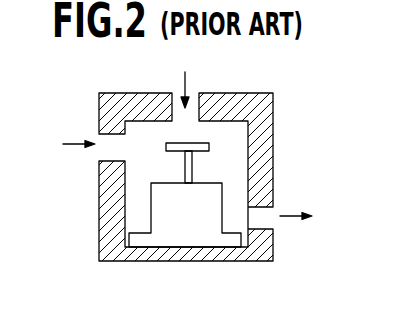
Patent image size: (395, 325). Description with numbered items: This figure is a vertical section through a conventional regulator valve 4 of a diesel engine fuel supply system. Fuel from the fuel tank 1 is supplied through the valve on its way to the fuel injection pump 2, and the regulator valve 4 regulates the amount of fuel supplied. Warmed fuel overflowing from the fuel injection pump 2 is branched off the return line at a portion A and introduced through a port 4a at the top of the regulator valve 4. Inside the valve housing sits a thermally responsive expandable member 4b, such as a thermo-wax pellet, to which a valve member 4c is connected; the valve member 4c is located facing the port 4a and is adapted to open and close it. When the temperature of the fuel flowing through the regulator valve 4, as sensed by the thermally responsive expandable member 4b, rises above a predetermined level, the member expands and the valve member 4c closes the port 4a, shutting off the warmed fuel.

The fuel tank 1 is at (71, 146).
The fuel injection pump 2 is at (303, 218).
The regulator valve 4 is at (240, 262).
The port 4a is at (195, 103).
The thermally responsive expandable member 4b is at (198, 203).
The valve member 4c is at (203, 143).
The portion A is at (184, 80).